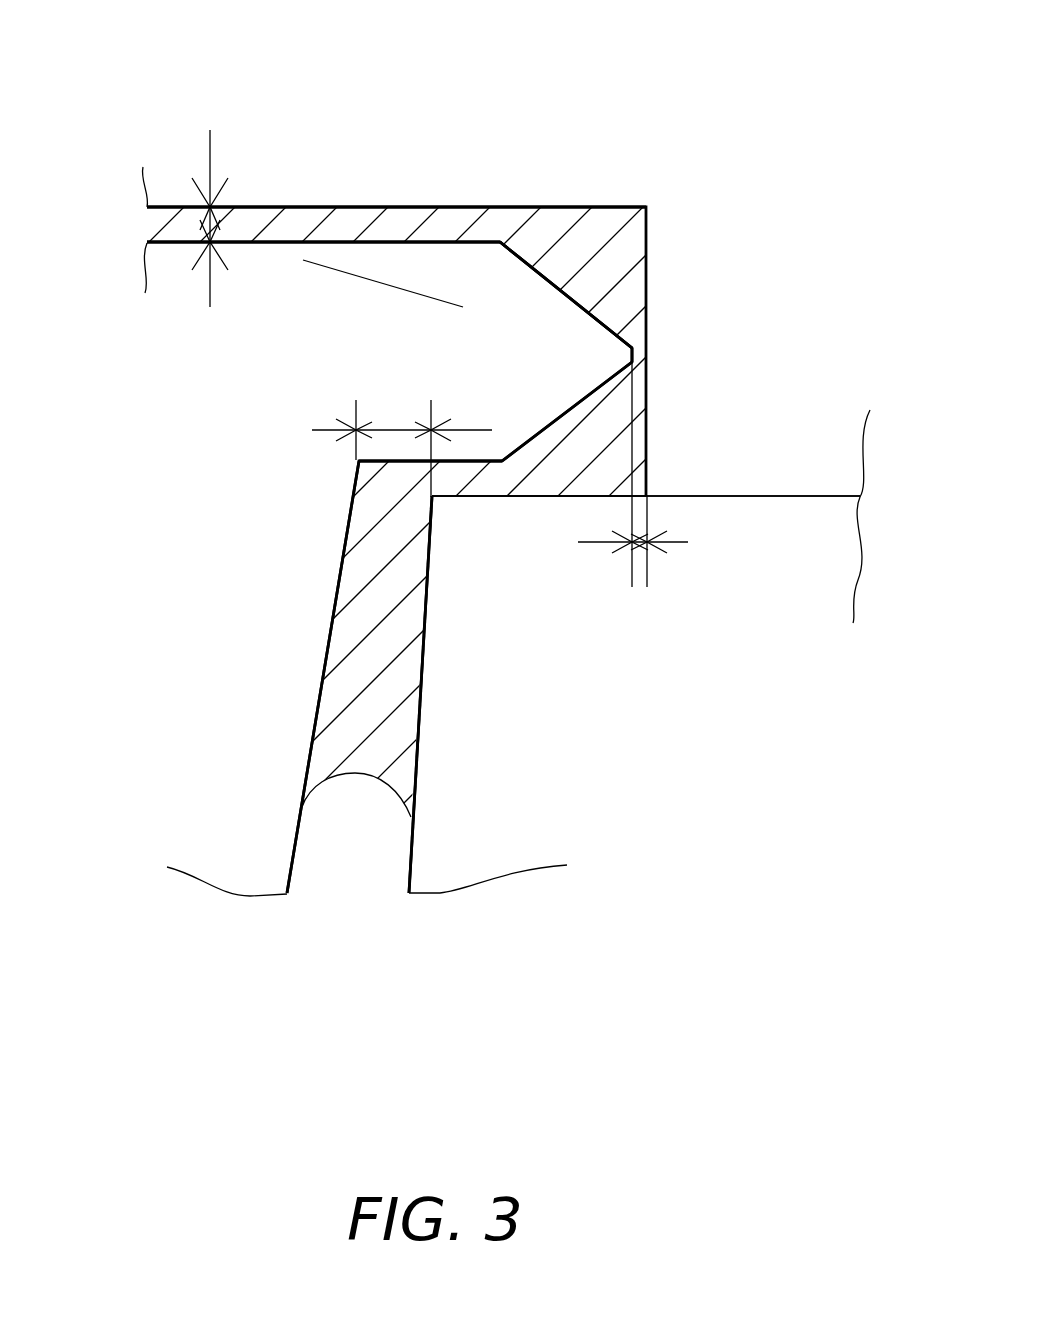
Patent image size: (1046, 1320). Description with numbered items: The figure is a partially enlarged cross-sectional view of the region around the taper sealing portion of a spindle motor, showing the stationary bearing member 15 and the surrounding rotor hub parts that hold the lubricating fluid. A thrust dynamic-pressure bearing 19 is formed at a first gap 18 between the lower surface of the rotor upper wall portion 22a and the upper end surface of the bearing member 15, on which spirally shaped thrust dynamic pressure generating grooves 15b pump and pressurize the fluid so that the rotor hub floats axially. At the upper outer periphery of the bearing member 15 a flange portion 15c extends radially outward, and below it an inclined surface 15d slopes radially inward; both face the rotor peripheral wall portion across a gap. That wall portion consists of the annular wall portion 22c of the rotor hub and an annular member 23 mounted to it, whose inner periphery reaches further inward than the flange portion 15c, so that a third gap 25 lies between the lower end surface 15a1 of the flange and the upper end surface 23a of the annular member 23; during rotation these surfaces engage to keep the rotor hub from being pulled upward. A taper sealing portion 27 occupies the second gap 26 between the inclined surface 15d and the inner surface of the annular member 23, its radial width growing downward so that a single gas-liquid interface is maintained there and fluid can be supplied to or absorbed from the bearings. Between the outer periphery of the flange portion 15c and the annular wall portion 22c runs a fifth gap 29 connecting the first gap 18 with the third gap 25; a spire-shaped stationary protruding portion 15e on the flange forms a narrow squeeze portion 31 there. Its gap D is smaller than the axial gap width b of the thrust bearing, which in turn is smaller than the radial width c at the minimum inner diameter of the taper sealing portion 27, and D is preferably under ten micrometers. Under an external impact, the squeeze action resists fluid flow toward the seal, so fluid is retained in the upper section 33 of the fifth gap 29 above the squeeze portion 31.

The bearing member 15 is at (118, 521).
The lower end surface of the flange portion 15a1 is at (462, 492).
The thrust dynamic pressure generating grooves 15b is at (400, 290).
The flange portion 15c is at (433, 372).
The inclined surface 15d is at (333, 613).
The stationary protruding portion 15e is at (605, 353).
The first gap 18 is at (350, 228).
The thrust dynamic-pressure bearing 19 is at (423, 230).
The rotor upper wall portion 22a is at (338, 38).
The annular wall portion 22c is at (838, 302).
The annular member 23 is at (619, 732).
The upper end surface of the annular member 23a is at (540, 496).
The third gap 25 is at (455, 477).
The second gap 26 is at (375, 638).
The taper sealing portion 27 is at (350, 805).
The fifth gap 29 is at (612, 425).
The squeeze portion 31 is at (640, 350).
The upper section of the fifth gap 33 is at (600, 267).
The axial gap width of the thrust dynamic-pressure bearing b is at (197, 223).
The radial gap width of the minimum inner-diameter portion of the taper sealing port c is at (398, 430).
The gap of the squeeze portion D is at (643, 537).